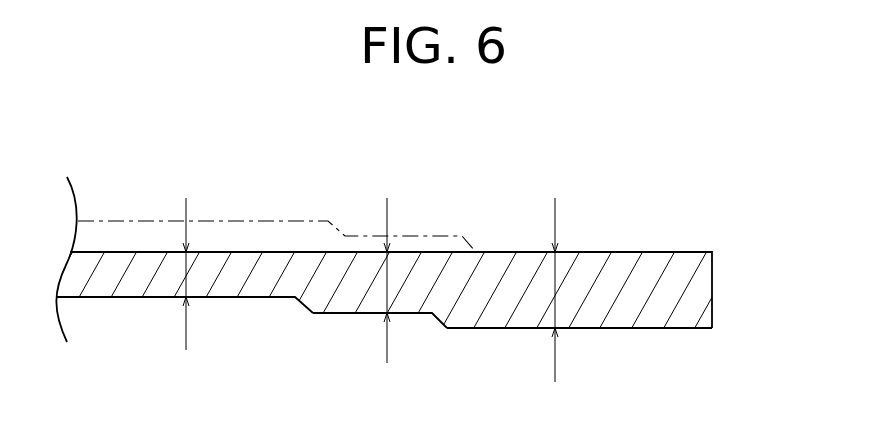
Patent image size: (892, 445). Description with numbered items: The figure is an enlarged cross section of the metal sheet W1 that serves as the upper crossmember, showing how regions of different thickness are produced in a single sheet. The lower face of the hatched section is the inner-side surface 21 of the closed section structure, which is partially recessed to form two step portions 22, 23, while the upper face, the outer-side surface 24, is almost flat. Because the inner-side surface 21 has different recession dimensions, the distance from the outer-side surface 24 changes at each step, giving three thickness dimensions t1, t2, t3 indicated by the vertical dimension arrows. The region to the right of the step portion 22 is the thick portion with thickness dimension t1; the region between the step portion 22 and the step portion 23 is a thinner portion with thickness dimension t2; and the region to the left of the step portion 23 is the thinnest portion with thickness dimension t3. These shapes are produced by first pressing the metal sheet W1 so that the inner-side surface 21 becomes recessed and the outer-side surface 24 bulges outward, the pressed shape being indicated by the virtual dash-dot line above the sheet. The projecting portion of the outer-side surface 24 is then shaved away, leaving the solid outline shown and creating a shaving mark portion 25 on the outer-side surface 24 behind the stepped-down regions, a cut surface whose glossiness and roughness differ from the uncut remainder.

The inner-side surface 21 is at (627, 330).
The step portion 22 is at (447, 328).
The step portion 23 is at (313, 313).
The outer-side surface 24 is at (605, 251).
The shaving mark portion 25 is at (258, 252).
The metal sheet W1 is at (712, 297).
The thickness dimension t1 is at (538, 290).
The thickness dimension t2 is at (369, 283).
The thickness dimension t3 is at (169, 274).